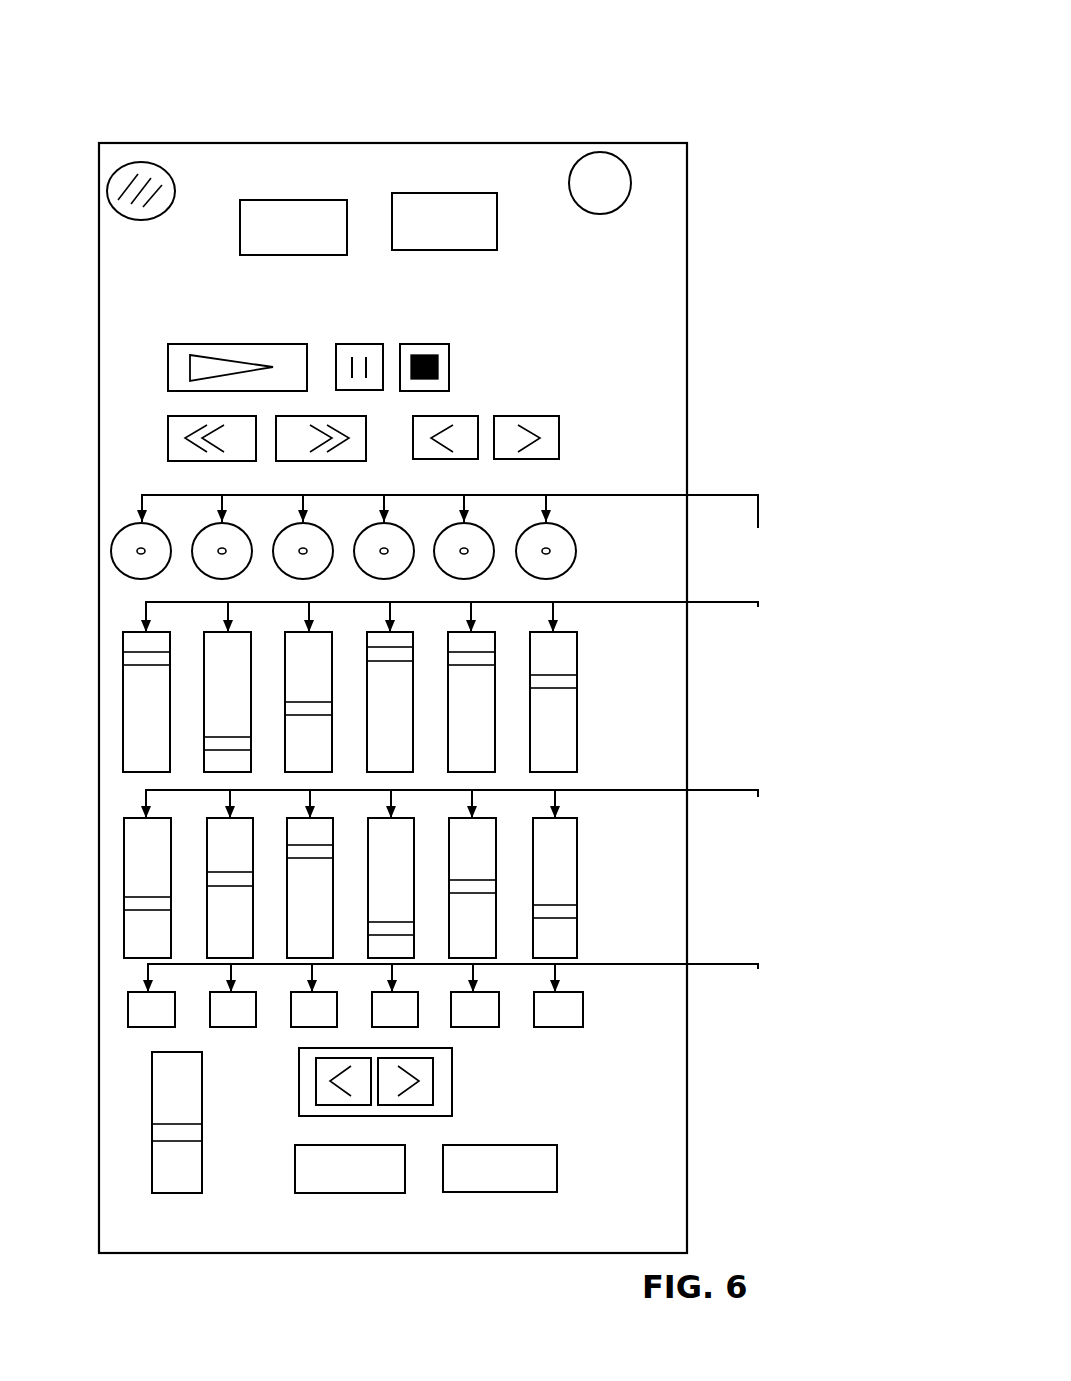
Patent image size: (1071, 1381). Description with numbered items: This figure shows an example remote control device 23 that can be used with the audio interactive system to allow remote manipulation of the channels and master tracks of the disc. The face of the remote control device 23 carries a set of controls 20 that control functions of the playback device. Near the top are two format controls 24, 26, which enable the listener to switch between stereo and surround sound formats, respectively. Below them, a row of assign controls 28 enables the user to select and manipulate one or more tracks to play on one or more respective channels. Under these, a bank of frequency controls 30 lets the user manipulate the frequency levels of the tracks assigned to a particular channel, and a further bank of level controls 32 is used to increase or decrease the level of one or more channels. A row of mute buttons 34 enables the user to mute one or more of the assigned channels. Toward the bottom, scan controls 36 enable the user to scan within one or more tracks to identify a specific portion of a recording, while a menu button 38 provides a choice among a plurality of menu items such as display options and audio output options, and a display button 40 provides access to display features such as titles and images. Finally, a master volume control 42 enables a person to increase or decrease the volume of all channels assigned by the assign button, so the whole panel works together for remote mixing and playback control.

The controls 20 is at (600, 70).
The remote control device 23 is at (525, 147).
The stereo control 24 is at (308, 208).
The surround control 26 is at (448, 210).
The assign controls 28 is at (759, 524).
The frequency controls 30 is at (756, 606).
The level controls 32 is at (744, 787).
The mute buttons 34 is at (758, 968).
The scan controls 36 is at (440, 1082).
The menu button 38 is at (312, 1183).
The display button 40 is at (462, 1187).
The master volume control 42 is at (168, 1188).